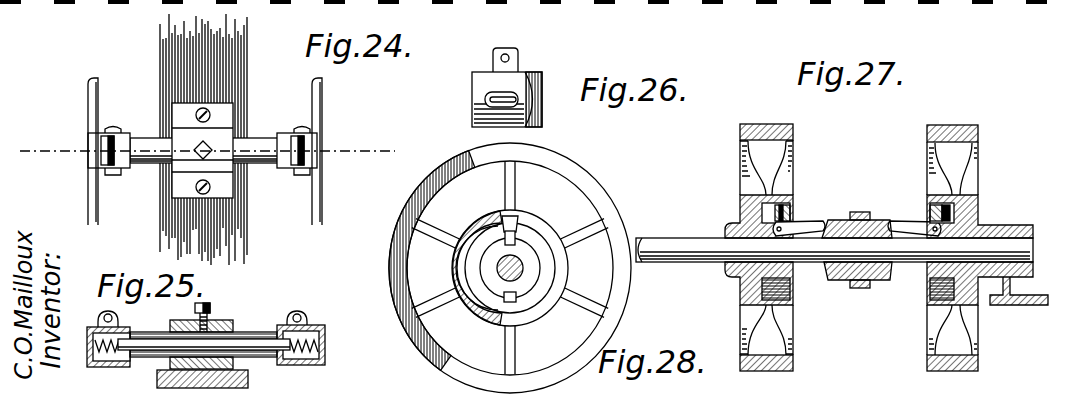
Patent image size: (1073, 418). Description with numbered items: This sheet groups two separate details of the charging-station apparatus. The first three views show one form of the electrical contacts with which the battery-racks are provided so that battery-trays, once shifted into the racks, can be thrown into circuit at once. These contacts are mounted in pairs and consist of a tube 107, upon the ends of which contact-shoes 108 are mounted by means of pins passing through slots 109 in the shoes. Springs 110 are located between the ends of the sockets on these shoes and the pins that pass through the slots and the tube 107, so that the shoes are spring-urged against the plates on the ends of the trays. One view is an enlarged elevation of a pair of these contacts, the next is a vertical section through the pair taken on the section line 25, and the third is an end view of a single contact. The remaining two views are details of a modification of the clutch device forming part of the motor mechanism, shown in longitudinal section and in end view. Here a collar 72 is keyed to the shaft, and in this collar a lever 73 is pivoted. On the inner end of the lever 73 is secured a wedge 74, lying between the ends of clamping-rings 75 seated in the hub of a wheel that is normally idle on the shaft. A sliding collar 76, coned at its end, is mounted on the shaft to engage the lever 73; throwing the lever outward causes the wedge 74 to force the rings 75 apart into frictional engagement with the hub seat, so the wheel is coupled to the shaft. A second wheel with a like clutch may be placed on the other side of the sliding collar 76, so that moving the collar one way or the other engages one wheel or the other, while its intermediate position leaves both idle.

In FIG. 24, the section line 25 is at (207, 154).
In FIG. 28, the collar 72 is at (525, 268).
In FIG. 27, the collar 72 is at (792, 271).
In FIG. 28, the lever 73 is at (514, 244).
In FIG. 27, the lever 73 is at (812, 227).
In FIG. 27, the wedge 74 is at (758, 207).
In FIG. 28, the clamping-rings 75 is at (463, 267).
In FIG. 27, the clamping-rings 75 is at (793, 223).
In FIG. 27, the sliding collar 76 is at (874, 218).
In FIG. 24, the tube 107 is at (256, 139).
In FIG. 25, the tube 107 is at (242, 334).
In FIG. 24, the contact-shoes 108 is at (330, 108).
In FIG. 26, the slots 109 is at (476, 107).
In FIG. 25, the springs 110 is at (302, 362).